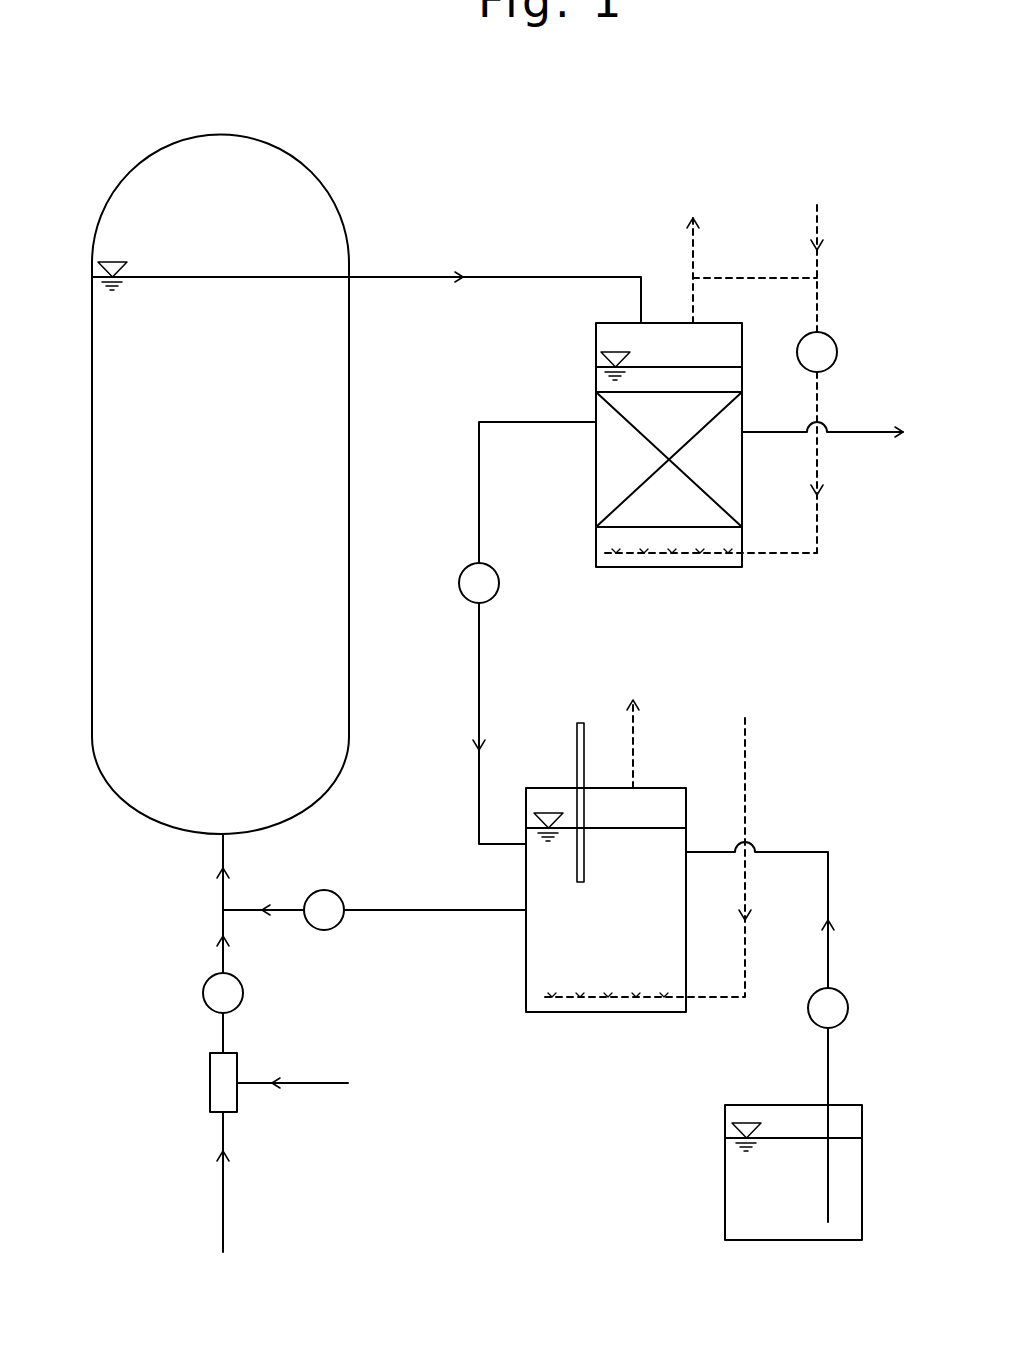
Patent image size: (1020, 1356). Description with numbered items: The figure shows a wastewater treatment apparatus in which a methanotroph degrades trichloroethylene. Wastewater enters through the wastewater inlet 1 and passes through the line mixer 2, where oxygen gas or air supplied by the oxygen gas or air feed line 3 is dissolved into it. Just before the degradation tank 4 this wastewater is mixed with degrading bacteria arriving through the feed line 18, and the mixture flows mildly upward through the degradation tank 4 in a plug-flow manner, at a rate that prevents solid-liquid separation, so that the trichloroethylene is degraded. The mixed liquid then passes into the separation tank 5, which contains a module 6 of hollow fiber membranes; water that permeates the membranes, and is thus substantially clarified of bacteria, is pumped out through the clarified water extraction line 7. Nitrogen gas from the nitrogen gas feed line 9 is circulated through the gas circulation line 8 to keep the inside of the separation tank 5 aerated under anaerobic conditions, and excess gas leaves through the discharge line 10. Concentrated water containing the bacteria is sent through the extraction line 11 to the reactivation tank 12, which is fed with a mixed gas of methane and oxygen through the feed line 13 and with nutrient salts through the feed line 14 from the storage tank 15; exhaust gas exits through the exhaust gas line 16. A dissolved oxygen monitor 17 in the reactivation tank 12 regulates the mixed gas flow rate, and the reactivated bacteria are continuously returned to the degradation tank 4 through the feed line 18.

The wastewater inlet 1 is at (223, 1190).
The line mixer 2 is at (210, 1068).
The oxygen gas or air feed line 3 is at (312, 1083).
The degradation tank 4 is at (92, 405).
The separation tank 5 is at (596, 337).
The module for membrane separation 6 is at (620, 493).
The clarified water extraction line 7 is at (870, 432).
The gas circulation line 8 is at (778, 553).
The nitrogen gas feed line 9 is at (817, 228).
The line for discharging excessive gas from the separation tank 10 is at (693, 248).
The line for extracting the degrading bacteria from the separation tank to the react 11 is at (479, 518).
The reactivation tank 12 is at (526, 978).
The feed line for a mixed gas of methane and oxygen 13 is at (745, 745).
The feed line for nutrient salts 14 is at (828, 852).
The storage tank for nutrient salts 15 is at (725, 1190).
The exhaust gas line 16 is at (633, 760).
The dissolved oxygen monitor 17 is at (577, 728).
The feed line for supplying the degrading bacteria from the reactivation tank to the 18 is at (440, 910).